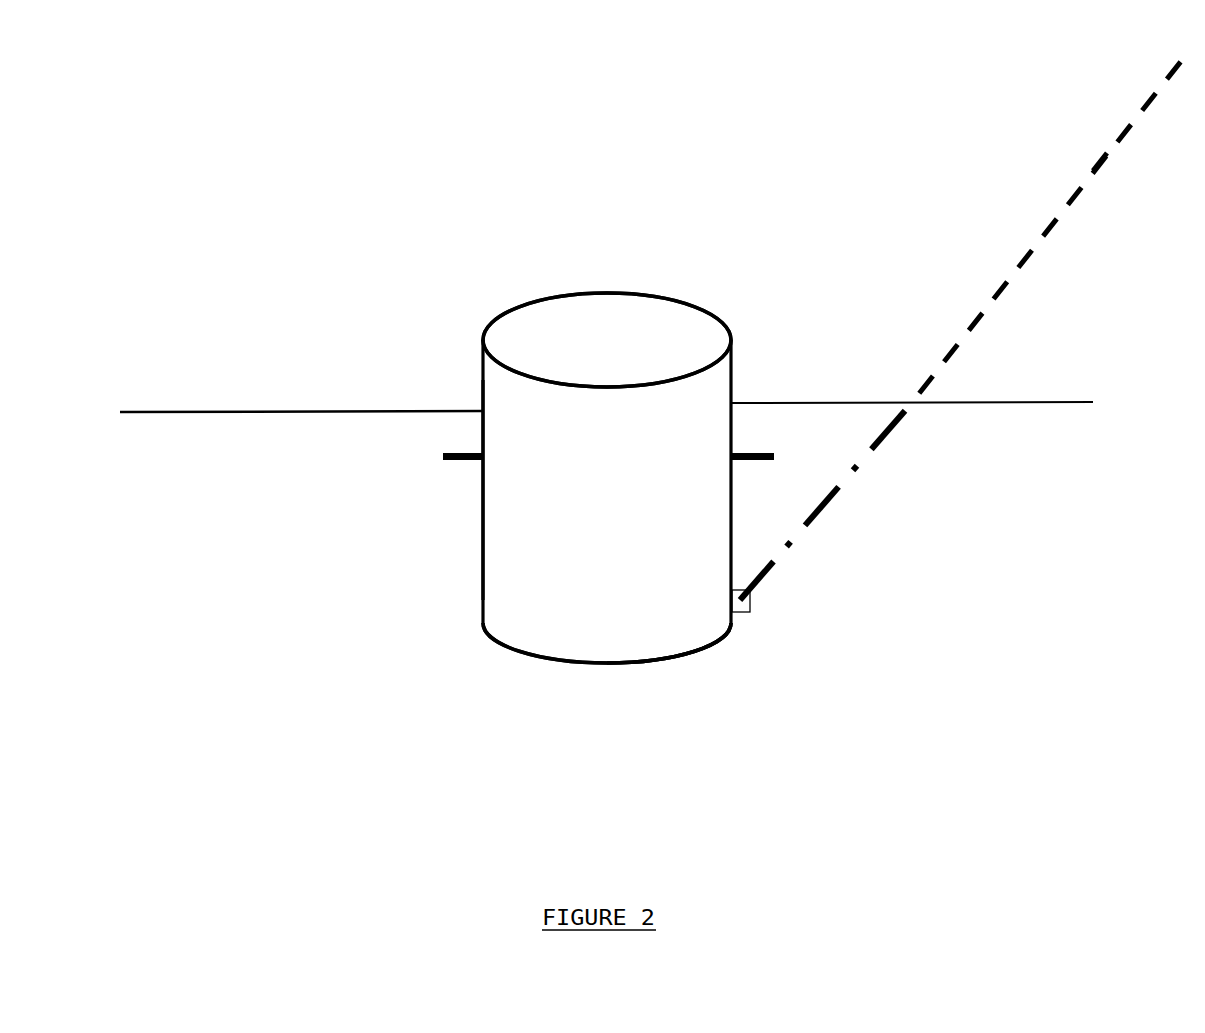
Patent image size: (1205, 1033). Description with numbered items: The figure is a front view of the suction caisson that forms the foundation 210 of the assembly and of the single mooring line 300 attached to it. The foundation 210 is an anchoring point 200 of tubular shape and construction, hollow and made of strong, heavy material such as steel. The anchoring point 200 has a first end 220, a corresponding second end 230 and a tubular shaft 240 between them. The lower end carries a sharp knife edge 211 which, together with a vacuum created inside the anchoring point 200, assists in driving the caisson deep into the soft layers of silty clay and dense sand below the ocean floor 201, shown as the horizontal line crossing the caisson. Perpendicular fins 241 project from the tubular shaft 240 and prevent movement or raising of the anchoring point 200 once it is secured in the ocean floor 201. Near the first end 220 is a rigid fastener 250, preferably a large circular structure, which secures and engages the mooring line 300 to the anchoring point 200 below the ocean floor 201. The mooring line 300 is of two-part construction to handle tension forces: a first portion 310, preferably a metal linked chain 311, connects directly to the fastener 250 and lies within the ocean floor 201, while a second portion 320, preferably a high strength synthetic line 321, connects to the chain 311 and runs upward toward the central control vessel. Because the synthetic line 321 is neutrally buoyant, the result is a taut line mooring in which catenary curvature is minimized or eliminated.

The anchoring point 200 is at (484, 488).
The ocean floor 201 is at (208, 412).
The foundation 210 is at (484, 505).
The sharp knife edge 211 is at (657, 653).
The first end 220 is at (531, 323).
The second end 230 is at (520, 652).
The tubular shaft 240 is at (552, 571).
The perpendicular fins 241 is at (757, 460).
The rigid fastener 250 is at (747, 615).
The mooring line 300 is at (880, 453).
The first portion 310 is at (818, 513).
The metal linked chain 311 is at (772, 572).
The second portion 320 is at (1025, 253).
The synthetic line 321 is at (1100, 168).